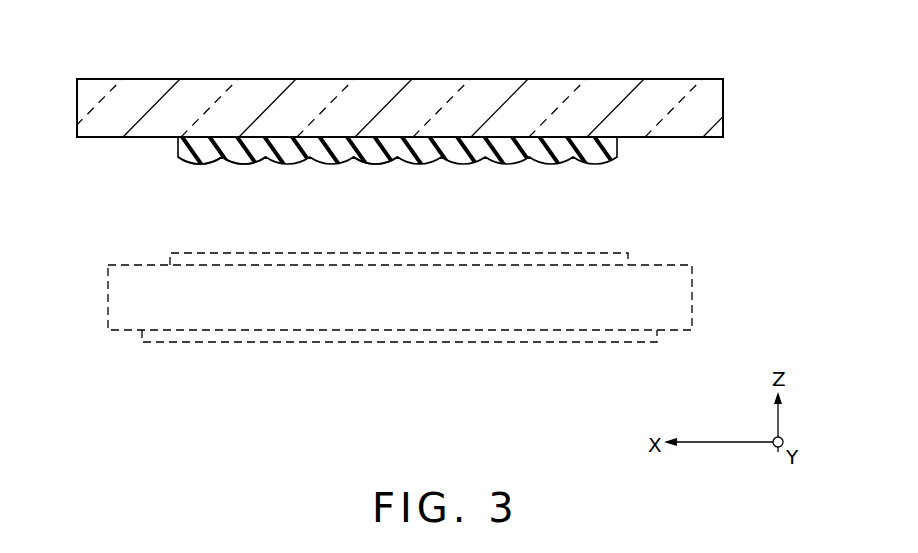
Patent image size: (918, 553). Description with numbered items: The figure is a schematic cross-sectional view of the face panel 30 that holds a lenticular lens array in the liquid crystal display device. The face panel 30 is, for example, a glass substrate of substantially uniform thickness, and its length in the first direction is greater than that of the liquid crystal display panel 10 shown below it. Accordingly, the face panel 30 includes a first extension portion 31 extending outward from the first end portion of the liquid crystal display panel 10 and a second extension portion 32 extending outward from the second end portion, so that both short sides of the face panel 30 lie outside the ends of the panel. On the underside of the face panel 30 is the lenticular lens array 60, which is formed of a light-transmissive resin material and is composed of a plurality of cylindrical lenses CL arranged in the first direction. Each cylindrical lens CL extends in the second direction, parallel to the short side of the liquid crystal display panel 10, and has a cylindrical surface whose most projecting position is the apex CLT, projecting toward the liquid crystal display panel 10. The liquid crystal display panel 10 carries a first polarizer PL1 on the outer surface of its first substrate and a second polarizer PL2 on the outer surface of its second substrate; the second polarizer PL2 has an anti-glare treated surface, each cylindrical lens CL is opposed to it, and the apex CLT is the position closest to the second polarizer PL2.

The face panel 30 is at (362, 92).
The first extension portion 31 is at (110, 142).
The second extension portion 32 is at (675, 142).
The lenticular lens array 60 is at (173, 157).
The cylindrical lens CL is at (203, 158).
The apex CLT is at (371, 172).
The liquid crystal display panel 10 is at (121, 333).
The first polarizer PL1 is at (185, 343).
The second polarizer PL2 is at (249, 254).